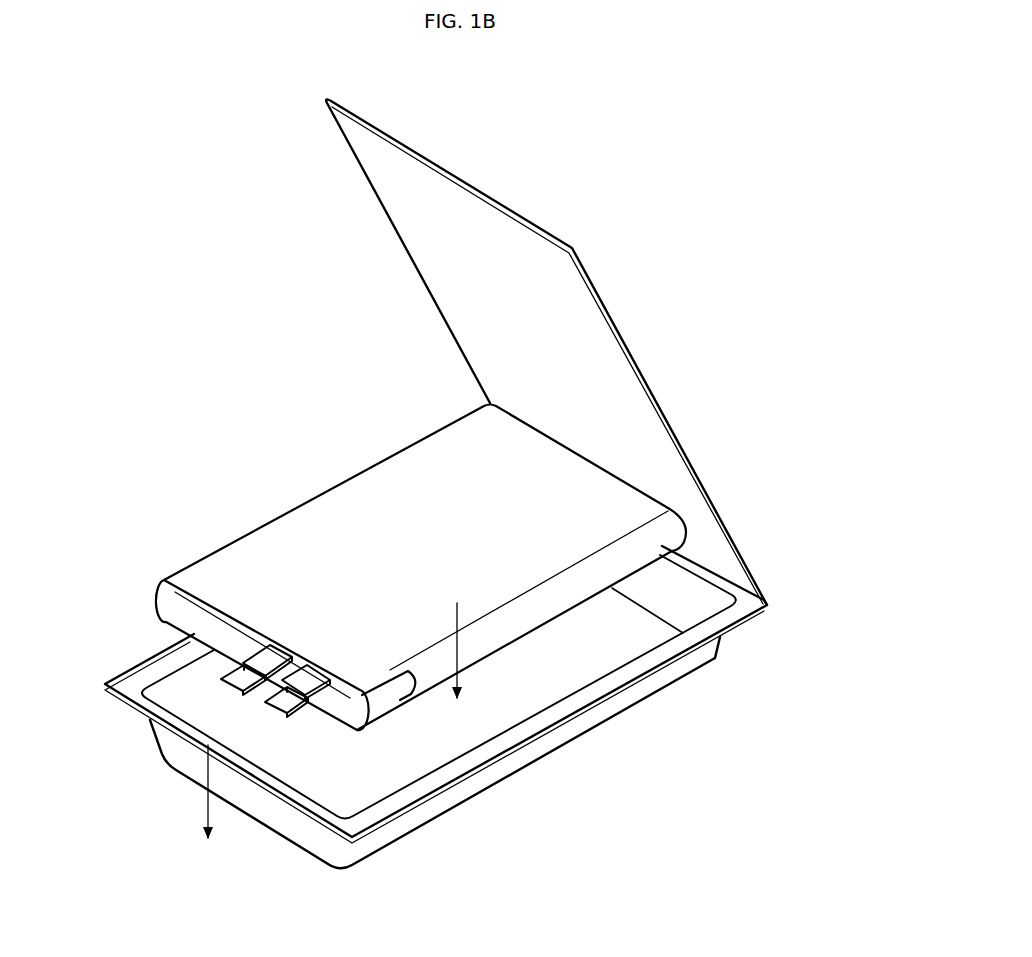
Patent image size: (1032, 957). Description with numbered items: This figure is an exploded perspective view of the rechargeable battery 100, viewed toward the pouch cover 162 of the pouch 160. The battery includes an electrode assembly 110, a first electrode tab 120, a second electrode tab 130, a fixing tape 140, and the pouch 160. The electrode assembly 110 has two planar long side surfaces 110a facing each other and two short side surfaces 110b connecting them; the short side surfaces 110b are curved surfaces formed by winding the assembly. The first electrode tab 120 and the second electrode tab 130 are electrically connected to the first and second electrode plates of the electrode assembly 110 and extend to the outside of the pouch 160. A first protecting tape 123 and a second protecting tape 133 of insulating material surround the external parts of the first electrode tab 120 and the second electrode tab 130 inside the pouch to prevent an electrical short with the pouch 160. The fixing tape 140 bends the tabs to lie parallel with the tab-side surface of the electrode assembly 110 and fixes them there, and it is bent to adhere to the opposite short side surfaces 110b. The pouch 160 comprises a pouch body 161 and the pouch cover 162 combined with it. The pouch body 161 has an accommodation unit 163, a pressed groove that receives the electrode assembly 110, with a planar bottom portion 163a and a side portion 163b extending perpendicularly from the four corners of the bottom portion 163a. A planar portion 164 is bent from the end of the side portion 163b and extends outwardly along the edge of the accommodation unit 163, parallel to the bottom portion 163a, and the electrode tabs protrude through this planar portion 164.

The rechargeable battery 100 is at (738, 151).
The electrode assembly 110 is at (236, 519).
The long side surfaces 110a is at (385, 514).
The short side surfaces 110b is at (622, 554).
The first electrode tab 120 is at (268, 702).
The first protecting tape 123 is at (313, 690).
The second electrode tab 130 is at (238, 679).
The second protecting tape 133 is at (257, 657).
The fixing tape 140 is at (163, 595).
The pouch 160 is at (845, 558).
The pouch body 161 is at (748, 620).
The pouch cover 162 is at (745, 575).
The accommodation unit 163 is at (692, 783).
The bottom portion 163a is at (418, 752).
The side portion 163b is at (587, 718).
The planar portion 164 is at (312, 808).